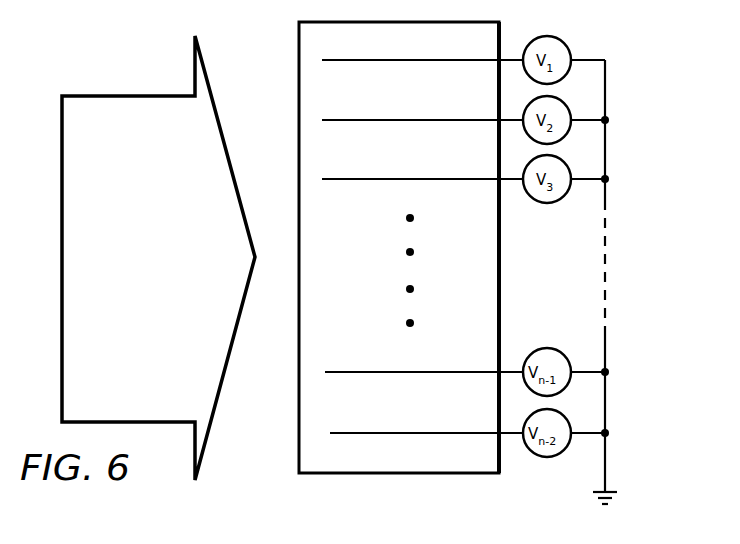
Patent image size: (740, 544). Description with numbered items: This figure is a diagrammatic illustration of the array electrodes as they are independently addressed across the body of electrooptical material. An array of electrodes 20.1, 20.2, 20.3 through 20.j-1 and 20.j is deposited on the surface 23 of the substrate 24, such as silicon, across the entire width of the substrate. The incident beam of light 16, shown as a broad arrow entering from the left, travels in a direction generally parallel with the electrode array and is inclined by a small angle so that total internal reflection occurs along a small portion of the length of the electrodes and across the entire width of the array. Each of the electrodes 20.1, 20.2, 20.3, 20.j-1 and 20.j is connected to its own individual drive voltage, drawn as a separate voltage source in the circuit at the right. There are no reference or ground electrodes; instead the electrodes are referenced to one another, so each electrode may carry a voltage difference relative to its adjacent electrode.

The incident beam of light 16 is at (126, 96).
The surface of substrate 23 is at (310, 48).
The substrate 24 is at (450, 22).
The electrode 20.1 is at (382, 60).
The electrode 20.2 is at (376, 120).
The electrode 20.3 is at (357, 179).
The electrode 20.j-1 is at (330, 372).
The electrode 20.j is at (343, 433).